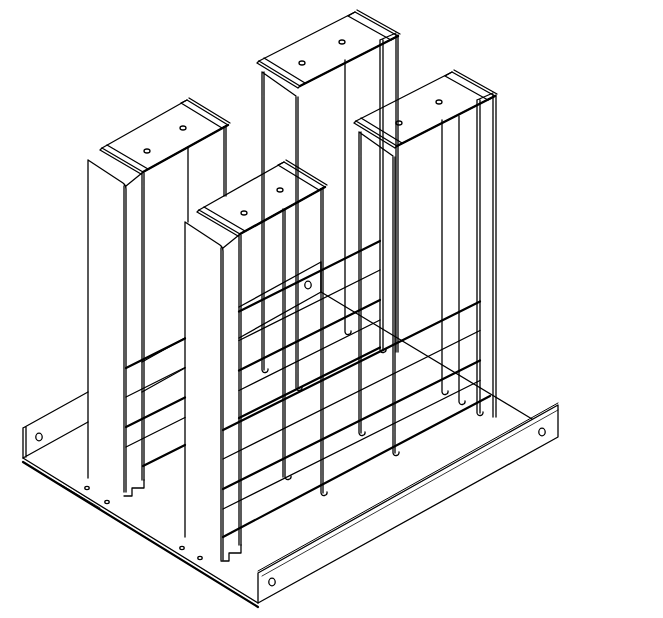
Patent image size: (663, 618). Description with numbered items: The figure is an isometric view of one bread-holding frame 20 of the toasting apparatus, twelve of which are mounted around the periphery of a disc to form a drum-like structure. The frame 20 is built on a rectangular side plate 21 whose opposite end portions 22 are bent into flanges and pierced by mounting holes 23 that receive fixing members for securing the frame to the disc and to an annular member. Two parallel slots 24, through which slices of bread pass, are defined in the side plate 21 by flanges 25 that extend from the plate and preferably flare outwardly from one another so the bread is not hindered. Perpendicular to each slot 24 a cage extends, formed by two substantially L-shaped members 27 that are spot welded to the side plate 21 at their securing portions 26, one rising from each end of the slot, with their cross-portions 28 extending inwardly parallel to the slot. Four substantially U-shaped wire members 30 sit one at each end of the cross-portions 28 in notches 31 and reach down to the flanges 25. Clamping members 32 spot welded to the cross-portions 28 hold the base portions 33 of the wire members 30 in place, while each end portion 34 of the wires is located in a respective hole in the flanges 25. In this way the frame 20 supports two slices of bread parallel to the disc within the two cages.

The frame 20 is at (70, 384).
The side plate 21 is at (168, 535).
The end portions 22 is at (53, 417).
The mounting holes 23 is at (277, 583).
The slots 24 is at (163, 450).
The flanges 25 is at (77, 478).
The securing portions 26 is at (95, 503).
The L-shaped members 27 is at (80, 345).
The cross-portions 28 is at (107, 164).
The wire members 30 is at (143, 238).
The notches 31 is at (141, 170).
The clamping members 32 is at (125, 150).
The base portions 33 is at (187, 99).
The end portions 34 is at (137, 508).